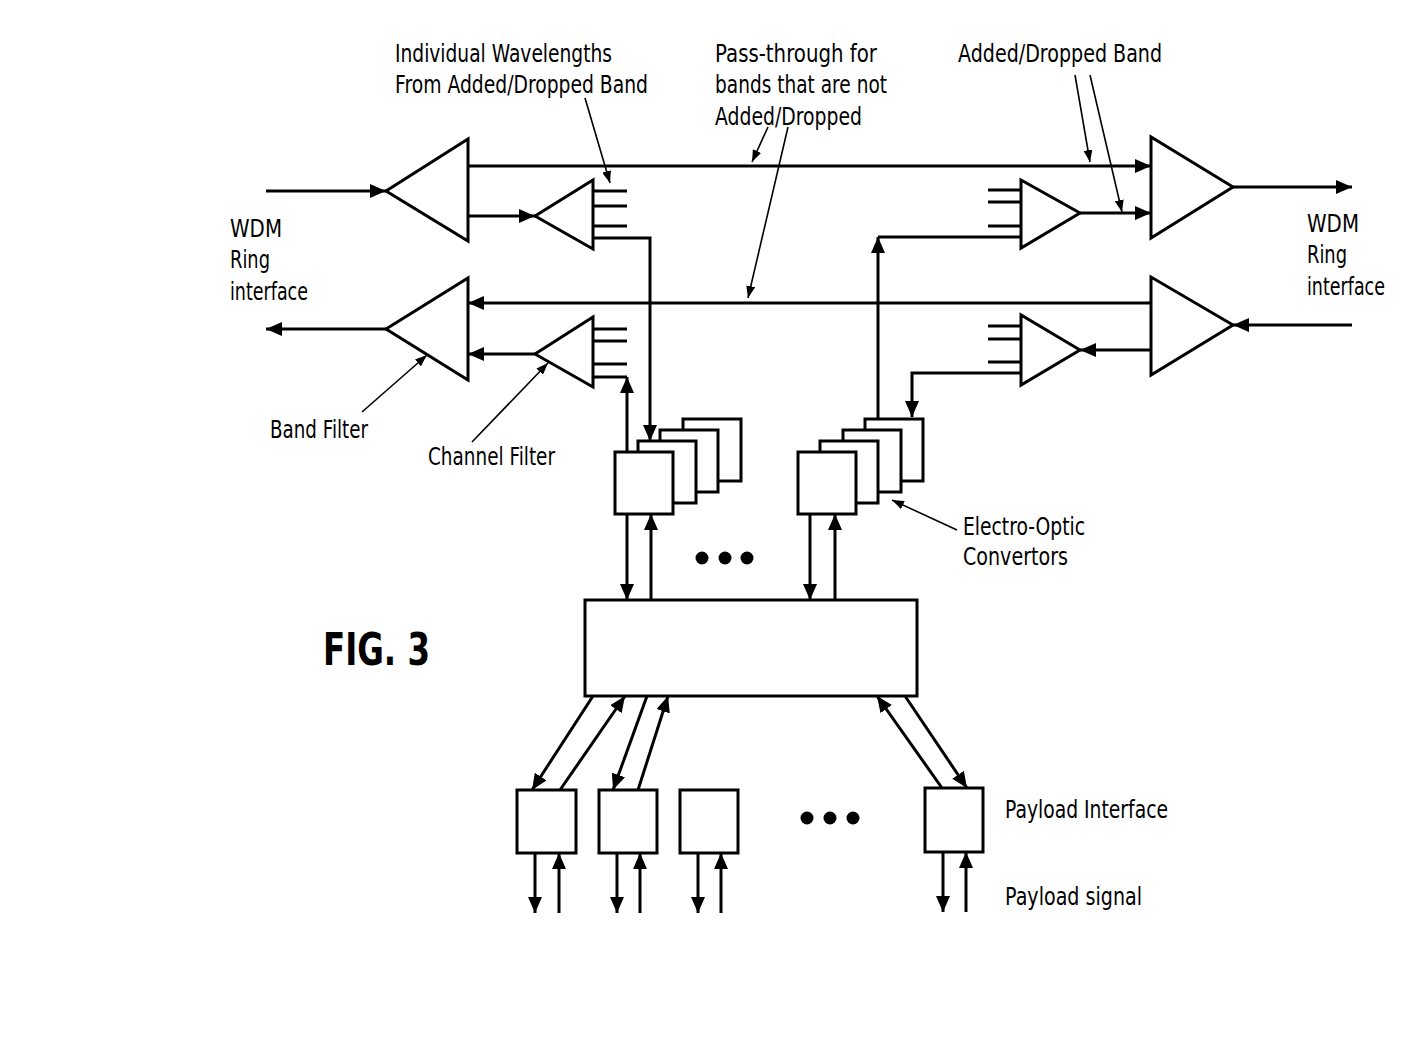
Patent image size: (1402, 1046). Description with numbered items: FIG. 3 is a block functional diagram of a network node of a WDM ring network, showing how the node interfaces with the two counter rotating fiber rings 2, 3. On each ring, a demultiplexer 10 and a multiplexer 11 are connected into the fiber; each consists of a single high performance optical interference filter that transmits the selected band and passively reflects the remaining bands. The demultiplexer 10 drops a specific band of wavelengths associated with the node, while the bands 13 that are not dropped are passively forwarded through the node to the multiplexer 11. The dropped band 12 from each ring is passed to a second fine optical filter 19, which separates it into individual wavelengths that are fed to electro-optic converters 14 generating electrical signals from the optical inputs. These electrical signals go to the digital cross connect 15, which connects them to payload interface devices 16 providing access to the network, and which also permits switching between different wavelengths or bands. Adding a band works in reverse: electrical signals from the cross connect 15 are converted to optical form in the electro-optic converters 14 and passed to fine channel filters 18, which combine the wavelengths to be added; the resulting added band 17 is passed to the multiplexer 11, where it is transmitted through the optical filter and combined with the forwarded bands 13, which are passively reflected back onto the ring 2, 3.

The counter rotating ring 2 is at (297, 190).
The counter rotating ring 3 is at (327, 327).
The demultiplexer 10 is at (445, 153).
The multiplexer 11 is at (450, 285).
The dropped band 12 is at (473, 215).
The forwarded bands 13 is at (537, 163).
The electro-optic converters 14 is at (715, 423).
The cross connect 15 is at (910, 638).
The payload interface devices 16 is at (657, 796).
The added band path to multiplexer 17 is at (507, 345).
The fine channel filter 18 is at (565, 370).
The fine optical filter 19 is at (573, 233).